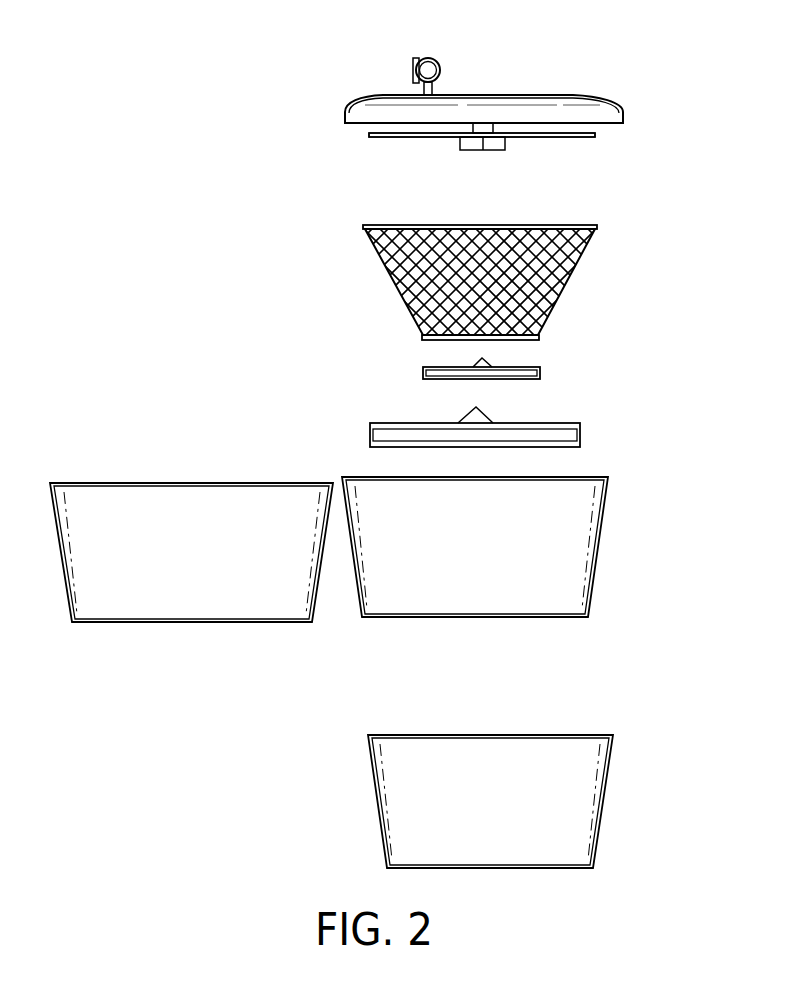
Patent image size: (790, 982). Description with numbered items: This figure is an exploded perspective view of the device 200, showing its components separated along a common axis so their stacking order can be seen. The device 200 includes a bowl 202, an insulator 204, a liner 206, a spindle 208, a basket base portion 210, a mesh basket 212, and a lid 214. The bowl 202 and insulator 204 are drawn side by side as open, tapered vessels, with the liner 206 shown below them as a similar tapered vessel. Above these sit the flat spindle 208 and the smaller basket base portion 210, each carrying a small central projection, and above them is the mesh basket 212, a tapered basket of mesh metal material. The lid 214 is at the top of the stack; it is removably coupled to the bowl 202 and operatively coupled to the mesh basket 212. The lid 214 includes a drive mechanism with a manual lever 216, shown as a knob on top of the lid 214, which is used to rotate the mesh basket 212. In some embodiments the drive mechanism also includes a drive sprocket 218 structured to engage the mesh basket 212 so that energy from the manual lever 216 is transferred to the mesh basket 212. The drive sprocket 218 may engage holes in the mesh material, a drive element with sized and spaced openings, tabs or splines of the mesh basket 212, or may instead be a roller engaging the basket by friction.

The pot assembly 200 is at (149, 44).
The bowl 202 is at (480, 618).
The insulator 204 is at (220, 623).
The liner 206 is at (602, 818).
The spindle 208 is at (370, 428).
The basket base portion 210 is at (423, 372).
The mesh basket 212 is at (378, 250).
The lid 214 is at (345, 120).
The manual lever 216 is at (442, 66).
The drive sprocket 218 is at (388, 138).